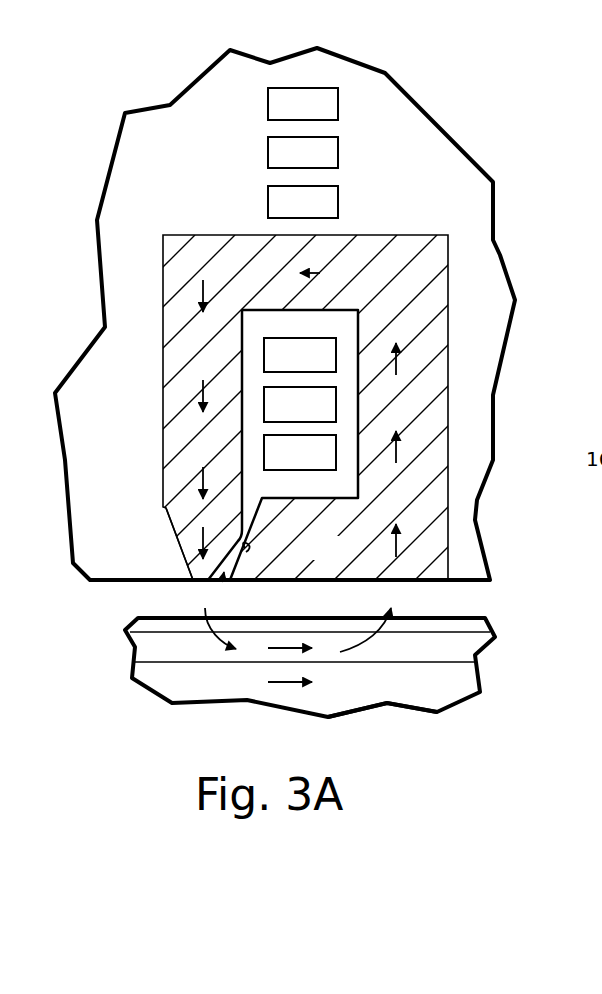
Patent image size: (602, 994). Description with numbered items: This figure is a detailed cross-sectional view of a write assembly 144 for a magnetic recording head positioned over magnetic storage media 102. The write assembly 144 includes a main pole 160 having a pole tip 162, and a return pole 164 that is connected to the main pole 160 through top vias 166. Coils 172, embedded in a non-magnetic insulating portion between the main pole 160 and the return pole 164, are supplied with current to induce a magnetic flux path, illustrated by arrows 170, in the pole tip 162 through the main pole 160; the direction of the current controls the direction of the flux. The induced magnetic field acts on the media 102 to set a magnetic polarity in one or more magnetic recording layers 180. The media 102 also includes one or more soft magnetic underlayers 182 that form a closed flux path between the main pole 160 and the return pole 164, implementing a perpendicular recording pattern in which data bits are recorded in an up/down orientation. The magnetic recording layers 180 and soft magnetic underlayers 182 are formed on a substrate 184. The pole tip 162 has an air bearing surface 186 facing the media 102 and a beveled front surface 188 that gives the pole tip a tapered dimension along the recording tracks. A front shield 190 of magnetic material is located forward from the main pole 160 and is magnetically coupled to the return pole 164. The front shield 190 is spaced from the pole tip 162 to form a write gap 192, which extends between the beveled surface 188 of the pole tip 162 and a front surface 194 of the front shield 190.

The magnetic storage media 102 is at (516, 643).
The write assembly 144 is at (440, 210).
The main pole 160 is at (182, 403).
The pole tip 162 is at (183, 522).
The return pole 164 is at (428, 360).
The top vias 166 is at (270, 250).
The magnetic flux path 170 is at (396, 463).
The coils 172 is at (338, 203).
The magnetic recording layers 180 is at (450, 623).
The soft magnetic underlayers 182 is at (438, 650).
The substrate 184 is at (393, 686).
The air bearing surface 186 is at (195, 582).
The beveled front surface 188 is at (238, 540).
The front shield 190 is at (330, 549).
The write gap 192 is at (222, 582).
The front surface 194 is at (245, 548).